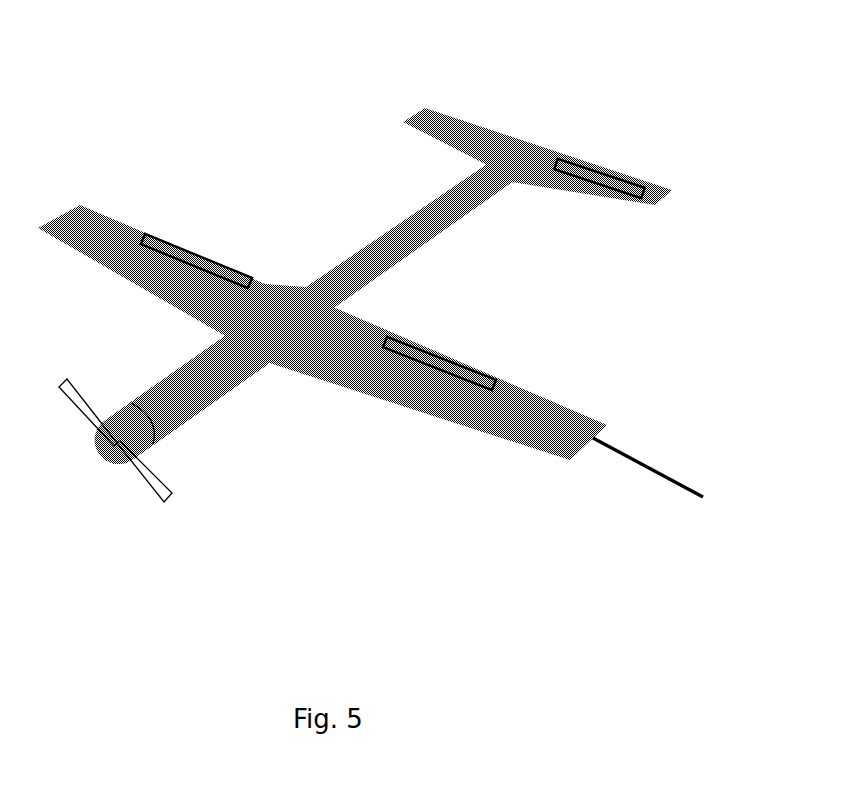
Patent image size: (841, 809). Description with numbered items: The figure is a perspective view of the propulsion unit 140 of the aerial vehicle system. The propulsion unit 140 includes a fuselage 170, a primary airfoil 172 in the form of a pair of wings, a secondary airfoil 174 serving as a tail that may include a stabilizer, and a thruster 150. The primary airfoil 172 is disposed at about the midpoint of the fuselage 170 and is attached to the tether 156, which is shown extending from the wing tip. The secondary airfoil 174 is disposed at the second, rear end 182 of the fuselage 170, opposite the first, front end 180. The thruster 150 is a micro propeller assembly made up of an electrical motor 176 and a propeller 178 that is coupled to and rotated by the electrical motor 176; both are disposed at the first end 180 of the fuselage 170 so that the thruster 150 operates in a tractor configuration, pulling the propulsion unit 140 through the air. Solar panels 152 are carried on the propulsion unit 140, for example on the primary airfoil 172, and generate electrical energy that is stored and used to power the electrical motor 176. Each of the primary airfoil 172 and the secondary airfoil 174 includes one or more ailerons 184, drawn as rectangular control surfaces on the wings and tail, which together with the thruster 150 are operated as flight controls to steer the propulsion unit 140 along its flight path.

The propulsion unit 140 is at (219, 84).
The thruster 150 is at (130, 463).
The solar panels 152 is at (490, 413).
The tether 156 is at (638, 458).
The fuselage 170 is at (240, 383).
The primary airfoil 172 is at (267, 287).
The secondary airfoil 174 is at (548, 152).
The electrical motor 176 is at (147, 436).
The propeller 178 is at (170, 498).
The first end 180 is at (153, 392).
The second end 182 is at (495, 188).
The ailerons 184 is at (448, 357).